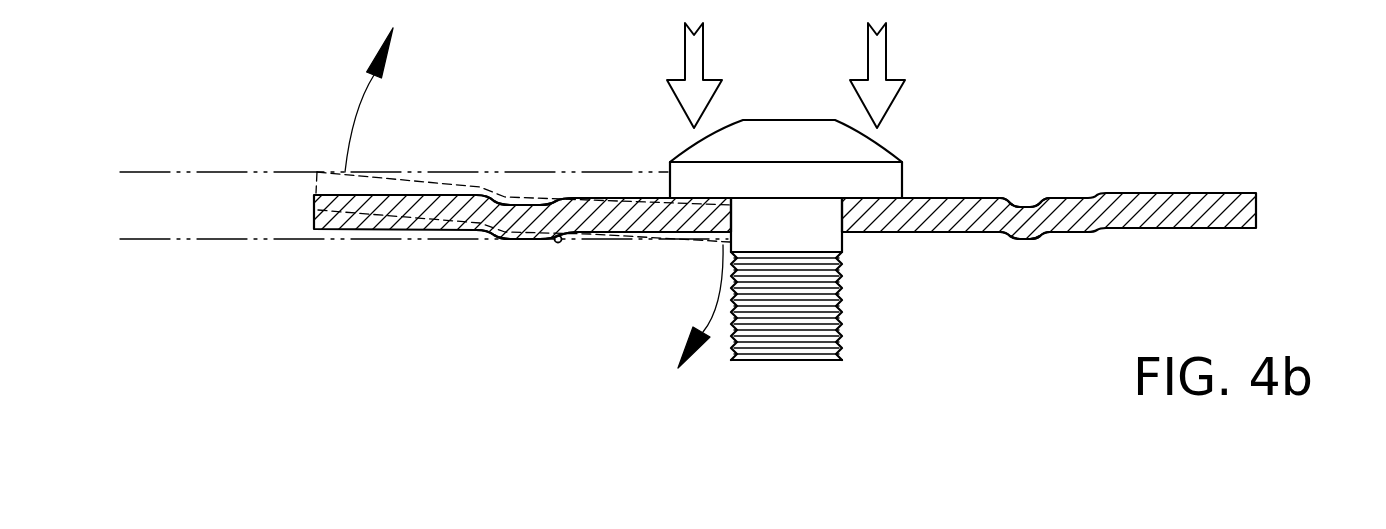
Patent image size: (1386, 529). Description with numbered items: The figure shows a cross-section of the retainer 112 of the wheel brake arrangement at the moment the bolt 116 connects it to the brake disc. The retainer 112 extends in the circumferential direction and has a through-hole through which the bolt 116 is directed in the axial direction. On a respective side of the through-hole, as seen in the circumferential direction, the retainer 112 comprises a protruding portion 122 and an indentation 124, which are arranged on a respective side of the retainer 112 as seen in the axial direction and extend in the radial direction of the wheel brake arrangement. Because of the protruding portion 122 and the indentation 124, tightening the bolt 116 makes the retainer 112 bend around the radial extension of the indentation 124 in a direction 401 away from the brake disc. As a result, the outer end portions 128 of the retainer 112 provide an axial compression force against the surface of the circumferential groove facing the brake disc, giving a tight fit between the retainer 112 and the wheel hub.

The direction 401 is at (358, 100).
The outer end portions 128 is at (313, 212).
The indentation 124 is at (562, 205).
The protruding portion 122 is at (558, 243).
The bolt 116 is at (788, 120).
The retainer 112 is at (1141, 207).